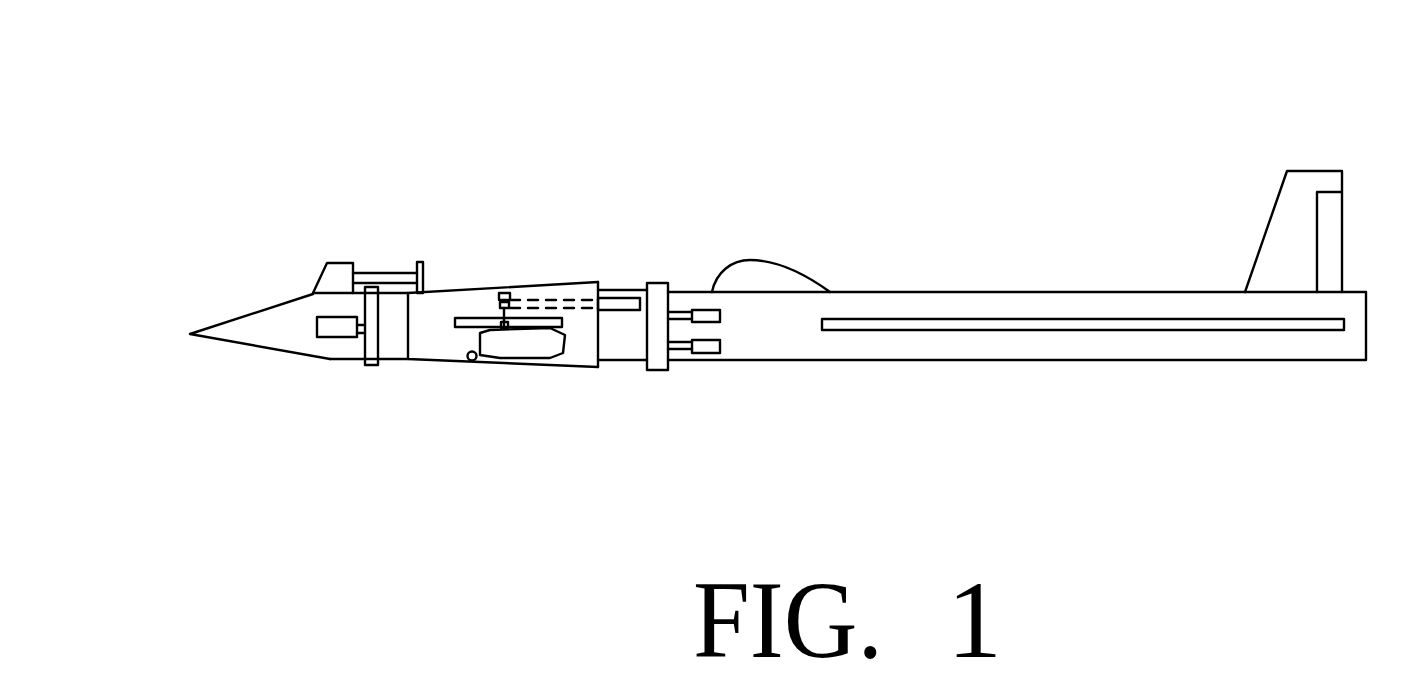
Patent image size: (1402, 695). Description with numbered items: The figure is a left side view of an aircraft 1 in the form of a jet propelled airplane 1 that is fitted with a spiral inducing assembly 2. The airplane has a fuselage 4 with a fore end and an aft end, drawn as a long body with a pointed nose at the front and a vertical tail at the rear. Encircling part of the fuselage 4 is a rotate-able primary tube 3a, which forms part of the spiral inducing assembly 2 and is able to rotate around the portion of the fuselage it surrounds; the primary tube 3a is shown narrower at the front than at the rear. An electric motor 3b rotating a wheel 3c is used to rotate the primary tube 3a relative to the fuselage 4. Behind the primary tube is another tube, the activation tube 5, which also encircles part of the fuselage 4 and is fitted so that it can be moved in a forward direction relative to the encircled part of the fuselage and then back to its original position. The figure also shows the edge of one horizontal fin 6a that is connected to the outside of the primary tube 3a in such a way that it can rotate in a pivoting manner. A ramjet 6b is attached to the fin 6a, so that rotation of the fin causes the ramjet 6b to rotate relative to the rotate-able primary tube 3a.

The aircraft 1 is at (807, 353).
The spiral inducing assembly 2 is at (524, 395).
The primary tube 3a is at (593, 353).
The electric motor 3b is at (333, 278).
The wheel 3c is at (417, 265).
The fuselage 4 is at (622, 332).
The activation tube 5 is at (655, 297).
The horizontal fin 6a is at (550, 323).
The ramjet 6b is at (502, 347).